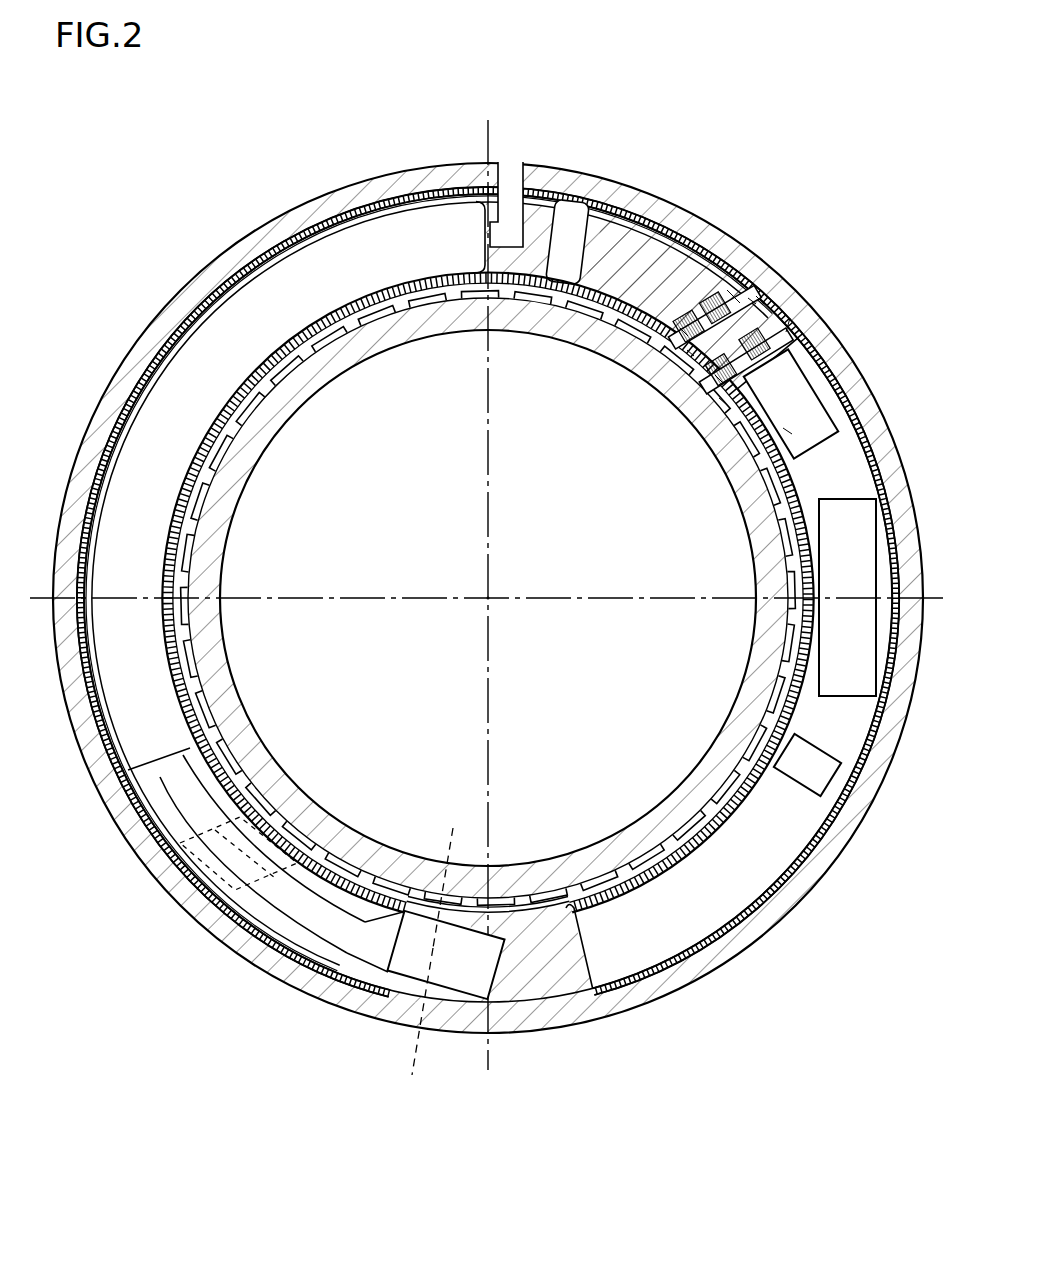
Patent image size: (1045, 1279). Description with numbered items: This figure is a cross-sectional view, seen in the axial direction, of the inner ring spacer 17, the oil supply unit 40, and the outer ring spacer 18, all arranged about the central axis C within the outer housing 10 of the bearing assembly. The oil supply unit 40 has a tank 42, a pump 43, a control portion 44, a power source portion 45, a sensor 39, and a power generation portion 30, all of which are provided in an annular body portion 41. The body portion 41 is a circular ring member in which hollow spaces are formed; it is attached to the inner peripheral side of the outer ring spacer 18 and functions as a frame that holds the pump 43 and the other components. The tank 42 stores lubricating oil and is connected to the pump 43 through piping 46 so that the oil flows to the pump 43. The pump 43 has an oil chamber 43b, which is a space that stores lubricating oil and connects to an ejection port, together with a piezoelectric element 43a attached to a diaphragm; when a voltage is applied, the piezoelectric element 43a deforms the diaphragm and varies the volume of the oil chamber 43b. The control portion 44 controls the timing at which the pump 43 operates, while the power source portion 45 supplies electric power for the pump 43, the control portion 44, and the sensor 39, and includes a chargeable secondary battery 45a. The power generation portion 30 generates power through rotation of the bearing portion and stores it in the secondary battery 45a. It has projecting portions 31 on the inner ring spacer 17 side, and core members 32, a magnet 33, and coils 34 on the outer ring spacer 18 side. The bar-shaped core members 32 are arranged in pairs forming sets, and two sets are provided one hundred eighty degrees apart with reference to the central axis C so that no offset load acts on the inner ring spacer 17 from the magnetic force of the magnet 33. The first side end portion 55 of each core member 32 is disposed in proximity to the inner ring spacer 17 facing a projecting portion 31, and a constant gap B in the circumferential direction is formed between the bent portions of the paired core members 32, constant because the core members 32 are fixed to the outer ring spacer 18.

The housing 10 is at (772, 928).
The inner ring spacer 17 is at (215, 545).
The outer ring spacer 18 is at (372, 190).
The power generation portion 30 is at (704, 299).
The projecting portion 31 is at (645, 330).
The core member 32 is at (727, 290).
The magnet 33 is at (760, 297).
The coil 34 is at (683, 330).
The sensor 39 is at (838, 778).
The oil supply unit 40 is at (286, 237).
The body portion 41 is at (205, 915).
The tank 42 is at (190, 333).
The pump 43 is at (405, 975).
The piezoelectric element 43a is at (408, 1026).
The oil chamber 43b is at (447, 874).
The control portion 44 is at (848, 685).
The power source portion 45 is at (806, 376).
The secondary battery 45a is at (787, 430).
The piping 46 is at (290, 935).
The first side end portion 55 is at (690, 352).
The constant gap B is at (752, 300).
The central axis C is at (490, 596).